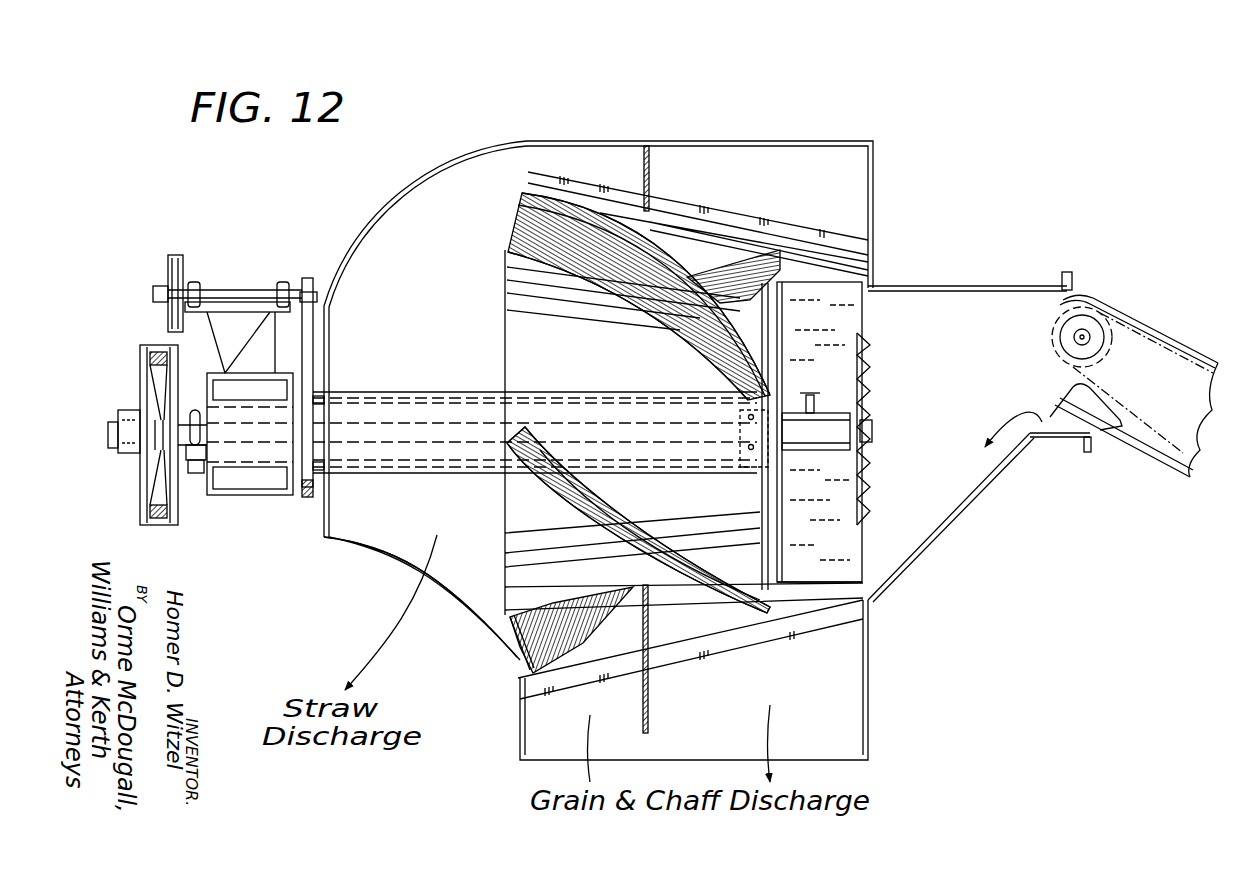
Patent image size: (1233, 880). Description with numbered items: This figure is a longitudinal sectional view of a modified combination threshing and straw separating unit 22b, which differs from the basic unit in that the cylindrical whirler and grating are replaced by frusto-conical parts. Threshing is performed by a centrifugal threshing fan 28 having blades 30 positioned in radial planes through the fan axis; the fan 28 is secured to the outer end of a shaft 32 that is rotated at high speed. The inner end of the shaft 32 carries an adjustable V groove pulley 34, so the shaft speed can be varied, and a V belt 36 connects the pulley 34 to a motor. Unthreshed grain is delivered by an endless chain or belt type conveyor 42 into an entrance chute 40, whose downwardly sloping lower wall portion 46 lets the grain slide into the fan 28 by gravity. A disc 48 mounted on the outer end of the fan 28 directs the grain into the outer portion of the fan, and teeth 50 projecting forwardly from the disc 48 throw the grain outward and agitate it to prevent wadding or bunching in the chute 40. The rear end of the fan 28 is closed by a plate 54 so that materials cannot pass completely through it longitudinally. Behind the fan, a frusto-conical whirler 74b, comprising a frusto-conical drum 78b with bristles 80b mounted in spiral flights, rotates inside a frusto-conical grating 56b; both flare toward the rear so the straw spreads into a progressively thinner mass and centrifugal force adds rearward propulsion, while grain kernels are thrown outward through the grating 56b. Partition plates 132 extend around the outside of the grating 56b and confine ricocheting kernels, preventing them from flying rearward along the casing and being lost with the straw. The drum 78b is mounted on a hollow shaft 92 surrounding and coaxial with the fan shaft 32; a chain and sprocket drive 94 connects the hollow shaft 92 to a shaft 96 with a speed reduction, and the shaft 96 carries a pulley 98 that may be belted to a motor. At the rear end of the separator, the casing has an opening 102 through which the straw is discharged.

The combination threshing and straw separating unit 22b is at (905, 145).
The partition plates 132 is at (651, 172).
The frusto-conical whirler 74b is at (503, 247).
The drum 78b is at (523, 333).
The bristles 80b is at (688, 320).
The centrifugal threshing fan 28 is at (862, 300).
The teeth 50 is at (876, 380).
The disc 48 is at (871, 394).
The conveyor 42 is at (1172, 352).
The entrance chute 40 is at (1053, 427).
The lower wall portion 46 is at (960, 498).
The plate 54 is at (782, 532).
The blades 30 is at (848, 570).
The frusto-conical grating 56b is at (790, 658).
The hollow shaft 92 is at (407, 473).
The shaft 32 is at (456, 445).
The straw discharge opening 102 is at (395, 552).
The adjustable V groove pulley 34 is at (140, 506).
The V belt 36 is at (157, 520).
The pulley 98 is at (173, 263).
The shaft 96 is at (243, 295).
The chain and sprocket drive 94 is at (308, 275).